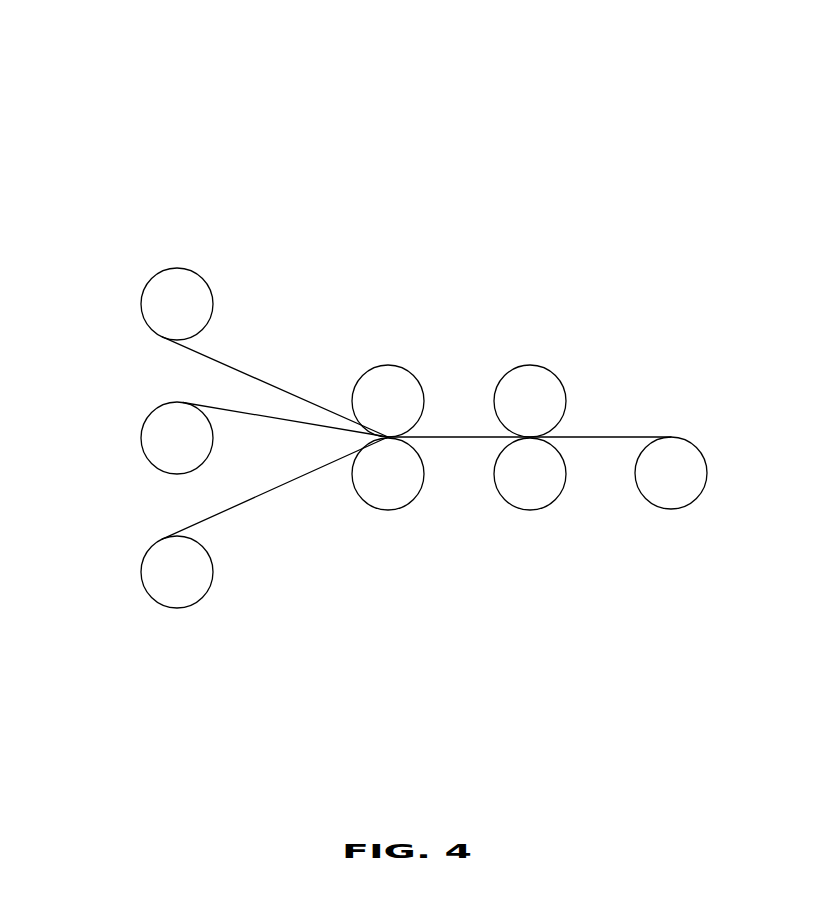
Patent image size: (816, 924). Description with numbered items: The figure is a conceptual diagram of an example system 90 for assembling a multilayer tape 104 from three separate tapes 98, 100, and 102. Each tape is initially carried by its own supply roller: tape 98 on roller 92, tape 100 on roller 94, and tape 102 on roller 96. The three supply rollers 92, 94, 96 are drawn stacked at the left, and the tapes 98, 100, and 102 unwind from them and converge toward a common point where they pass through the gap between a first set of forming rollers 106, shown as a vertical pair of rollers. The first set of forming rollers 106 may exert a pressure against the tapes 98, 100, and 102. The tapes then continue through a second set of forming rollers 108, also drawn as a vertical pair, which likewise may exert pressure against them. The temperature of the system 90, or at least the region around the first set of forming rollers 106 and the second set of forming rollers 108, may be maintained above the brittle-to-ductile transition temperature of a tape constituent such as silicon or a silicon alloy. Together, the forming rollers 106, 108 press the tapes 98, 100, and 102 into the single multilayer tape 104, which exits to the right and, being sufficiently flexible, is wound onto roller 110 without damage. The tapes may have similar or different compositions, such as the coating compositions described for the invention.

The system 90 is at (85, 85).
The roller 92 is at (152, 298).
The roller 94 is at (152, 438).
The roller 96 is at (152, 567).
The tape 98 is at (242, 372).
The tape 100 is at (212, 407).
The tape 102 is at (260, 495).
The multilayer tape 104 is at (613, 437).
The first set of forming rollers 106 is at (407, 362).
The second set of forming rollers 108 is at (557, 358).
The roller 110 is at (697, 465).